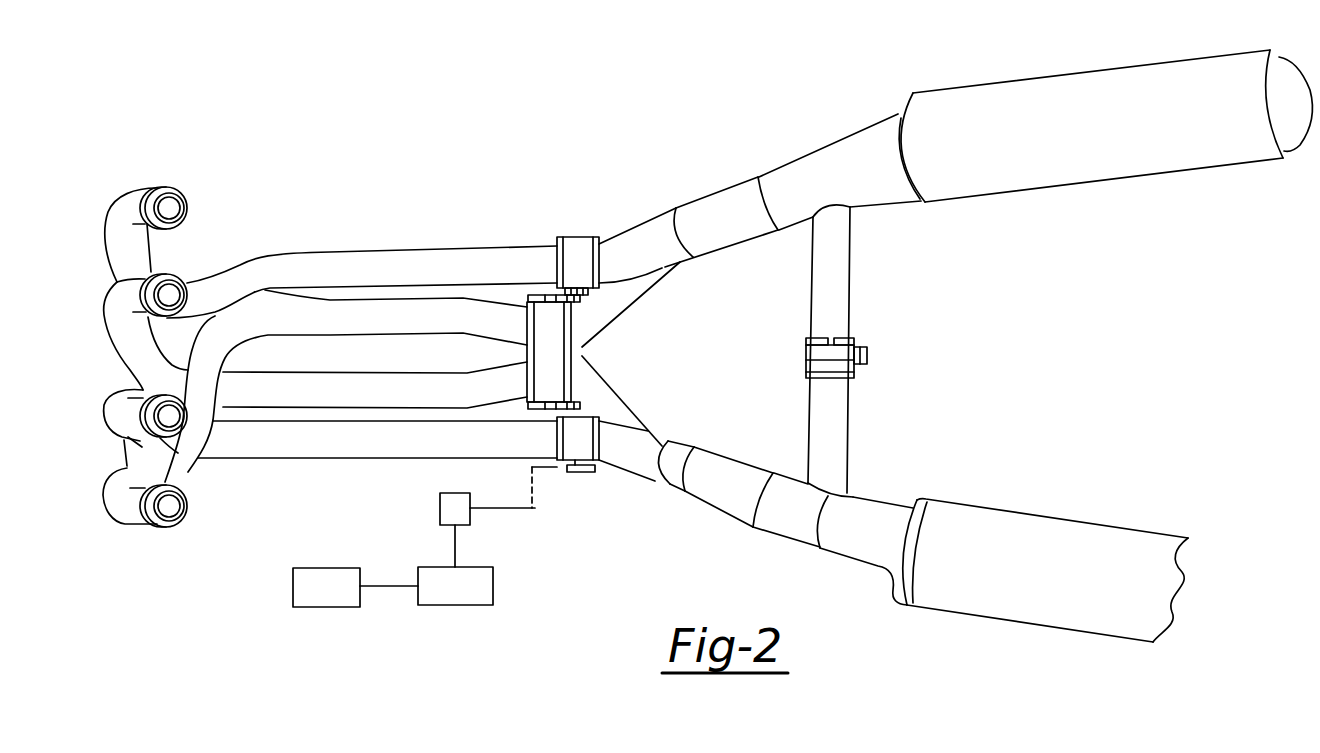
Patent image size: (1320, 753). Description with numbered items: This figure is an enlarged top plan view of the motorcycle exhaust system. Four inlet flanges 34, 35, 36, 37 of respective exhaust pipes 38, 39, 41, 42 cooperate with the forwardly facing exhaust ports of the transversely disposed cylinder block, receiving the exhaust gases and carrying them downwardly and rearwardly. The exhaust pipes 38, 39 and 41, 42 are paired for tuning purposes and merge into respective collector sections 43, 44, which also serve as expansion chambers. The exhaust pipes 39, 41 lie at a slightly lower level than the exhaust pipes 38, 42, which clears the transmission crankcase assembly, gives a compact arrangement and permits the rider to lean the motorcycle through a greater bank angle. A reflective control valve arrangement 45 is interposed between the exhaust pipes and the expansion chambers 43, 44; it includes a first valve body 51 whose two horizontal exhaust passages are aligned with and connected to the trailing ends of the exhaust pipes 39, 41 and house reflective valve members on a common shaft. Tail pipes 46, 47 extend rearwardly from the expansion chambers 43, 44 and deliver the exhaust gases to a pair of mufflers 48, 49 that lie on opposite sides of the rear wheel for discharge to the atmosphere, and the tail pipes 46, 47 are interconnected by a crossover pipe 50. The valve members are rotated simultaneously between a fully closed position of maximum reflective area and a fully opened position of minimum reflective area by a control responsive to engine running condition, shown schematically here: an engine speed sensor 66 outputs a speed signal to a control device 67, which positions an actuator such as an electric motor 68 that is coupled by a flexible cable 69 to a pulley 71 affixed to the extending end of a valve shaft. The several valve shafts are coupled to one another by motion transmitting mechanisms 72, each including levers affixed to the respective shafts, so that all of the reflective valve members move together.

The inlet flange 34 is at (128, 468).
The inlet flange 35 is at (150, 276).
The inlet flange 36 is at (153, 530).
The inlet flange 37 is at (147, 188).
The exhaust pipe 38 is at (258, 460).
The exhaust pipe 39 is at (325, 410).
The exhaust pipe 41 is at (285, 292).
The exhaust pipe 42 is at (360, 251).
The collector section 43 is at (643, 415).
The collector section 44 is at (625, 283).
The reflective control valve arrangement 45 is at (604, 222).
The tail pipe 46 is at (730, 458).
The tail pipe 47 is at (732, 181).
The muffler 48 is at (1013, 520).
The muffler 49 is at (1018, 195).
The crossover pipe 50 is at (848, 308).
The first valve body 51 is at (568, 361).
The engine speed sensor 66 is at (330, 608).
The control device 67 is at (465, 603).
The electric motor 68 is at (440, 513).
The flexible cable 69 is at (527, 514).
The pulley 71 is at (577, 478).
The motion transmitting mechanism 72 is at (598, 300).